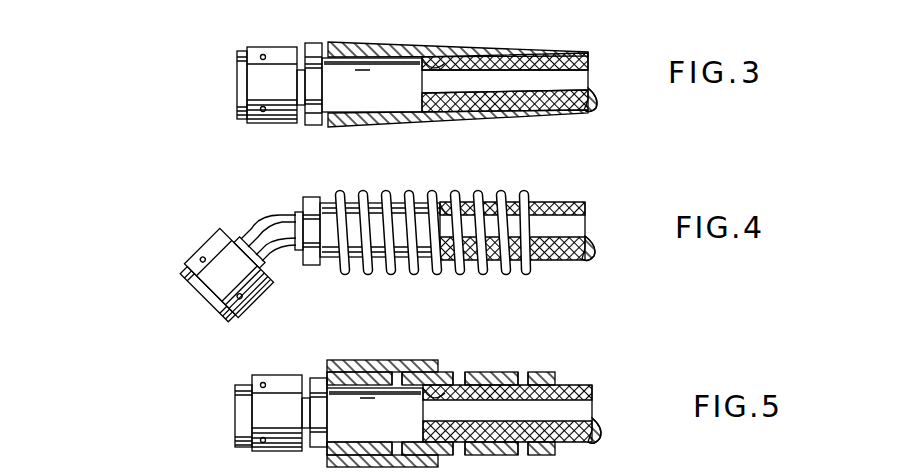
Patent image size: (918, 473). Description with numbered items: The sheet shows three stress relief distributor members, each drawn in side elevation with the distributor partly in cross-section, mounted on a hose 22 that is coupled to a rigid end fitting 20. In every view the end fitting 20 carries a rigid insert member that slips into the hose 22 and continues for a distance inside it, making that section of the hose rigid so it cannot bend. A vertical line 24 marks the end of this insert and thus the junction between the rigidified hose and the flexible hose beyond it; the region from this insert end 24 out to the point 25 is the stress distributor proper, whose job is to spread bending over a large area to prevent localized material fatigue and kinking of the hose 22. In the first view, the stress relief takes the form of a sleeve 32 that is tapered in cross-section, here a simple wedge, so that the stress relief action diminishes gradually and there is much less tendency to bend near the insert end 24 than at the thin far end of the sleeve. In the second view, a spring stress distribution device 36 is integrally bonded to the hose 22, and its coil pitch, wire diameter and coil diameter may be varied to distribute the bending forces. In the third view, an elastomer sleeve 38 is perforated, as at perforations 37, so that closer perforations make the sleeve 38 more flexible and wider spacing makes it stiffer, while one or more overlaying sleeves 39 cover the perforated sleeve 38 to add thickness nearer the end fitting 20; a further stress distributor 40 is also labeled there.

In FIG. 3, the end fitting 20 is at (150, 145).
In FIG. 4, the end fitting 20 is at (142, 331).
In FIG. 5, the end fitting 20 is at (150, 447).
In FIG. 3, the hose 22 is at (590, 60).
In FIG. 4, the hose 22 is at (585, 213).
In FIG. 5, the hose 22 is at (577, 403).
In FIG. 3, the end of the insert 24 is at (441, 58).
In FIG. 4, the end of the insert 24 is at (413, 200).
In FIG. 5, the end of the insert 24 is at (450, 372).
In FIG. 3, the end of the stress distributor 25 is at (572, 110).
In FIG. 4, the end of the stress distributor 25 is at (528, 272).
In FIG. 5, the end of the stress distributor 25 is at (558, 372).
In FIG. 3, the sleeve 32 is at (350, 42).
In FIG. 4, the spring stress distribution device 36 is at (447, 192).
In FIG. 5, the perforations 37 is at (468, 372).
In FIG. 5, the elastomer sleeve 38 is at (490, 372).
In FIG. 5, the overlaying sleeves 39 is at (372, 360).
In FIG. 5, the stress distributor 40 is at (506, 458).